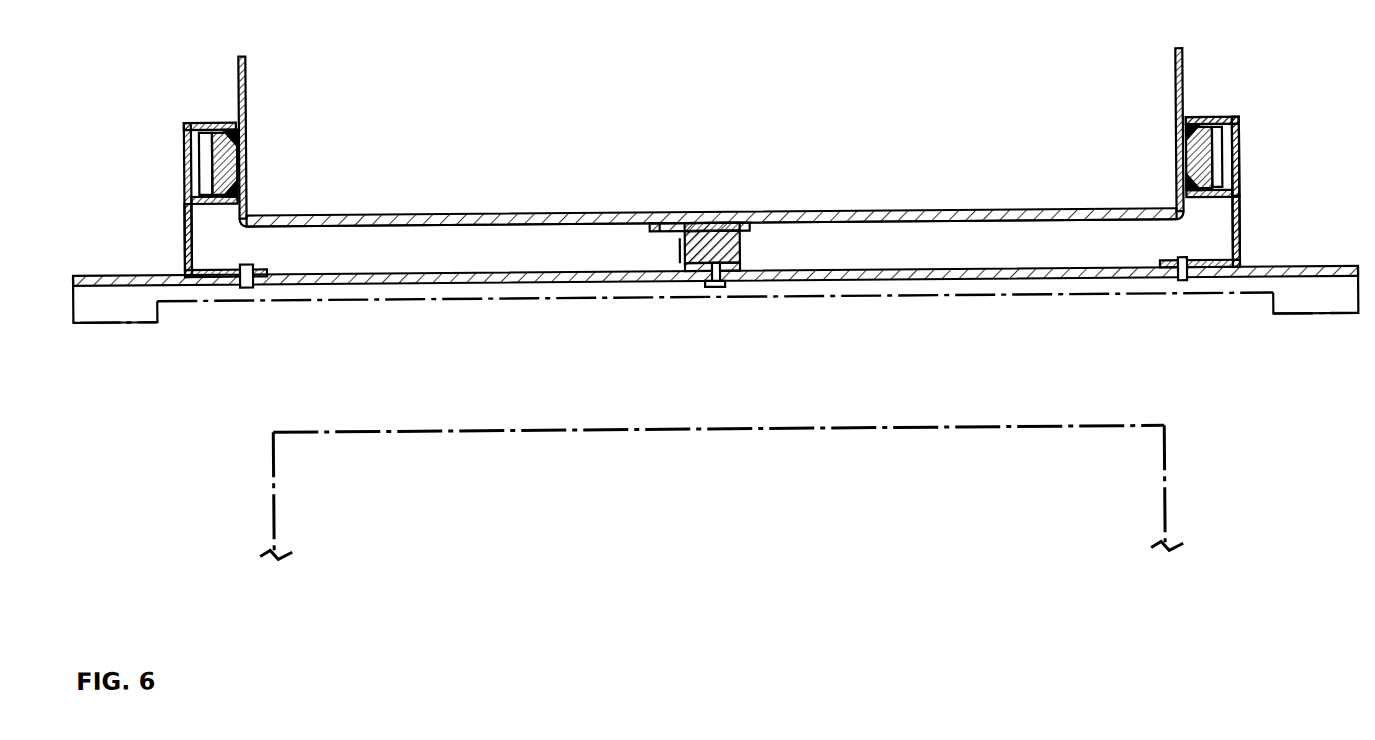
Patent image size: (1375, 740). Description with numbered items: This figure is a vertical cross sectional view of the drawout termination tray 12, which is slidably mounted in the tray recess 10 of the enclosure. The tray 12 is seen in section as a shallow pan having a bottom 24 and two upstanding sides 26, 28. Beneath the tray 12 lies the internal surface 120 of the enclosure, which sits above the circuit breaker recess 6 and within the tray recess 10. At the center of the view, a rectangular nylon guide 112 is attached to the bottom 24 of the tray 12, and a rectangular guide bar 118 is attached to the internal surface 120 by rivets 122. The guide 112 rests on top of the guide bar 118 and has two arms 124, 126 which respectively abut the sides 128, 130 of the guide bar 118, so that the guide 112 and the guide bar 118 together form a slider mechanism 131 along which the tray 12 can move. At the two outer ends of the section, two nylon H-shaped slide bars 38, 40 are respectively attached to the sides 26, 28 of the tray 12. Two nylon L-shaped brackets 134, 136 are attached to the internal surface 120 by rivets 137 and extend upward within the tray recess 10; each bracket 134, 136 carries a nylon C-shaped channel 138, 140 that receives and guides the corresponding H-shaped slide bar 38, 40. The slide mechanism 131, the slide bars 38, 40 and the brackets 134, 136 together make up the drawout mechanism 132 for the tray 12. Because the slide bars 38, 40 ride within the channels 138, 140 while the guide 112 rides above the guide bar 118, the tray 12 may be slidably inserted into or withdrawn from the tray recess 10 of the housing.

The circuit breaker recess 6 is at (1150, 462).
The tray recess 10 is at (1117, 243).
The termination tray 12 is at (773, 142).
The bottom 24 is at (1008, 225).
The side 26 is at (247, 81).
The side 28 is at (1177, 72).
The slide bar 38 is at (234, 131).
The slide bar 40 is at (1190, 131).
The guide 112 is at (662, 231).
The guide bar 118 is at (770, 277).
The internal surface 120 is at (920, 280).
The rivets 122 is at (717, 282).
The arm 124 is at (680, 238).
The arm 126 is at (747, 233).
The side 128 is at (702, 230).
The side 130 is at (723, 228).
The slider mechanism 131 is at (850, 245).
The drawout mechanism 132 is at (257, 146).
The bracket 134 is at (187, 241).
The bracket 136 is at (1243, 235).
The rivets 137 is at (243, 283).
The channel 138 is at (200, 121).
The channel 140 is at (1222, 121).